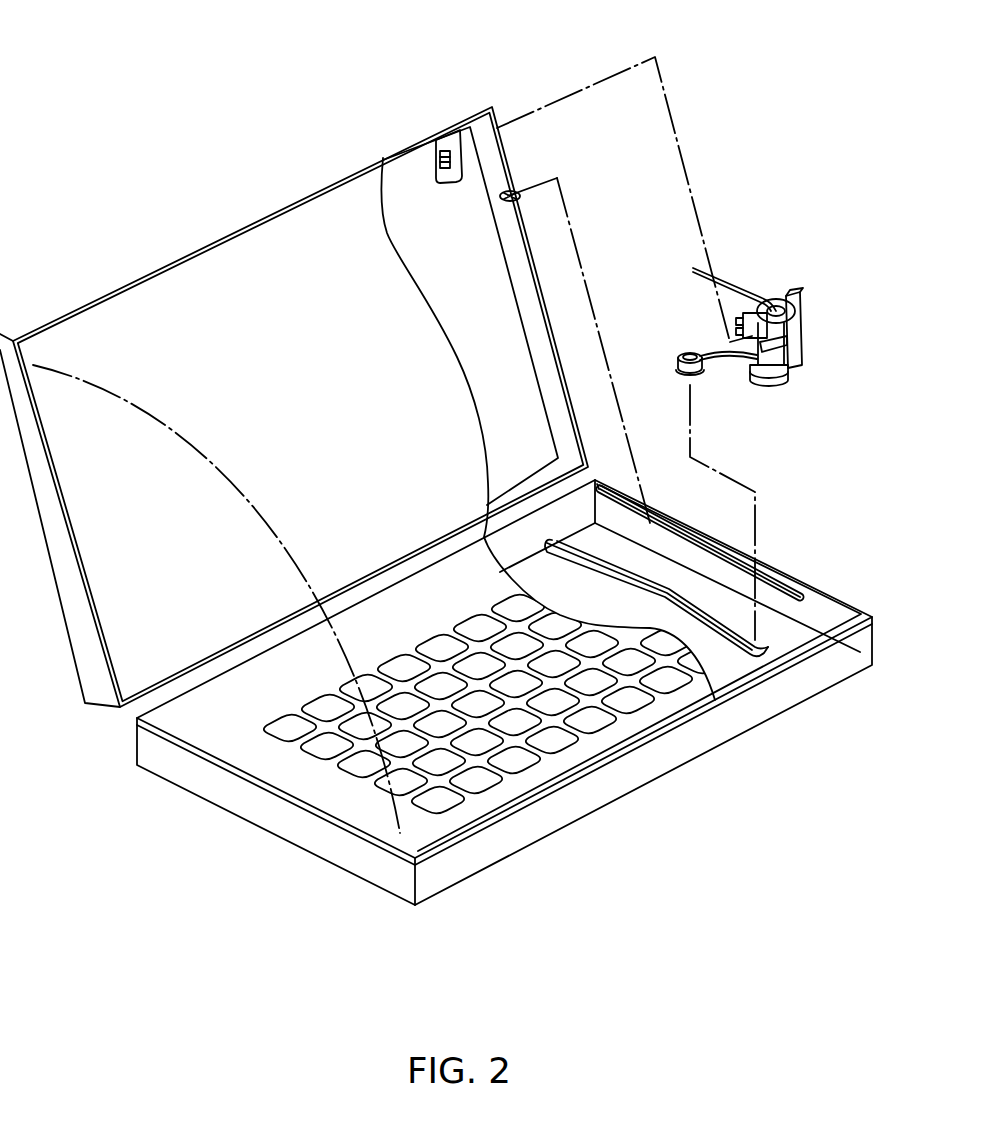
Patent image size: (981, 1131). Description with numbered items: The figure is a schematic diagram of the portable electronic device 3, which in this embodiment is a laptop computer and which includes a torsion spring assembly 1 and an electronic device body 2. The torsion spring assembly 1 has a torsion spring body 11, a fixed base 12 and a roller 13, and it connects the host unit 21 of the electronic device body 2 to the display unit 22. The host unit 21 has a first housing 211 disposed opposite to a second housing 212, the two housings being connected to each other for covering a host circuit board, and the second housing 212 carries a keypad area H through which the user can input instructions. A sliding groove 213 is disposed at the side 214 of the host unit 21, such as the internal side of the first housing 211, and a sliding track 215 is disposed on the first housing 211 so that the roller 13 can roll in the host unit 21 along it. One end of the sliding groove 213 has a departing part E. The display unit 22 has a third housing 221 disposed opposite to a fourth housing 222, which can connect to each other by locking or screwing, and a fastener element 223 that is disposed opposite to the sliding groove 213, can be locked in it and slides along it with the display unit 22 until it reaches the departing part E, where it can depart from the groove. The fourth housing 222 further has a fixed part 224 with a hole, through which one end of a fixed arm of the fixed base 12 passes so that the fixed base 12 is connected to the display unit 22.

The torsion spring assembly 1 is at (799, 244).
The torsion spring body 11 is at (767, 290).
The fixed base 12 is at (815, 325).
The roller 13 is at (690, 355).
The electronic device body 2 is at (62, 776).
The host unit 21 is at (176, 776).
The display unit 22 is at (92, 710).
The portable electronic device 3 is at (126, 100).
The first housing 211 is at (665, 750).
The second housing 212 is at (585, 753).
The sliding groove 213 is at (795, 588).
The side 214 is at (828, 618).
The sliding track 215 is at (770, 648).
The third housing 221 is at (220, 270).
The fourth housing 222 is at (318, 177).
The fastener element 223 is at (508, 193).
The fixed part 224 is at (433, 158).
The departing part E is at (597, 484).
The keypad area H is at (327, 750).